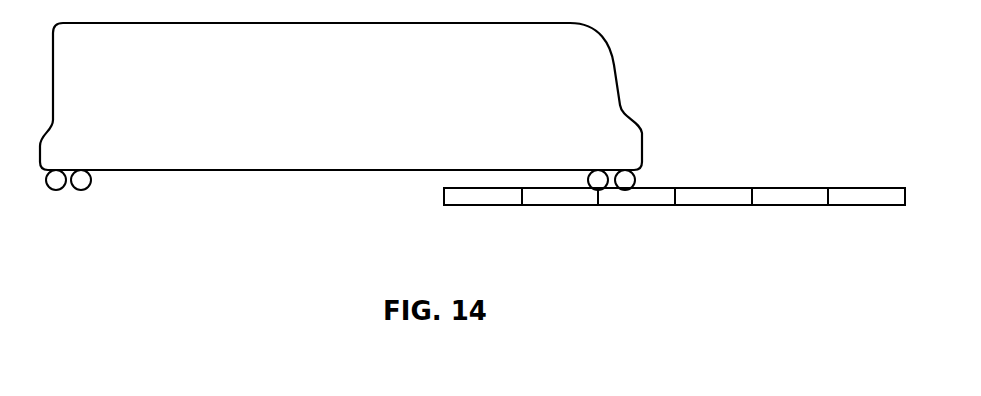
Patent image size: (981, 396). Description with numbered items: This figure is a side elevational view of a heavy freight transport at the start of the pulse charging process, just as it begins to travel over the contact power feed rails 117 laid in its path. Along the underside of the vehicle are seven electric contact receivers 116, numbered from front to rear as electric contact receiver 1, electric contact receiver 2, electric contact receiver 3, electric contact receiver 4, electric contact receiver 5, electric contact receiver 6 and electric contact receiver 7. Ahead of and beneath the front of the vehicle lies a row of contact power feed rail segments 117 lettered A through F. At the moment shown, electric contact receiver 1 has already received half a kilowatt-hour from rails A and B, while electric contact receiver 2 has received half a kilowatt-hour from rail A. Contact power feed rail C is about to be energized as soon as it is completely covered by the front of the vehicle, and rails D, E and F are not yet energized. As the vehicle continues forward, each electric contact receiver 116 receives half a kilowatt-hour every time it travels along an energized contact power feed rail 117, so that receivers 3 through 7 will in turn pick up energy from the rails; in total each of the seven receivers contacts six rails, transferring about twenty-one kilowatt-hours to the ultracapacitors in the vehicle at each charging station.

The electric contact receiver 116 is at (400, 179).
The contact power feed rail 117 is at (840, 214).
The electric contact receiver 1 is at (560, 188).
The electric contact receiver 2 is at (485, 188).
The electric contact receiver 3 is at (407, 190).
The electric contact receiver 4 is at (328, 190).
The electric contact receiver 5 is at (252, 190).
The electric contact receiver 6 is at (176, 190).
The electric contact receiver 7 is at (98, 190).